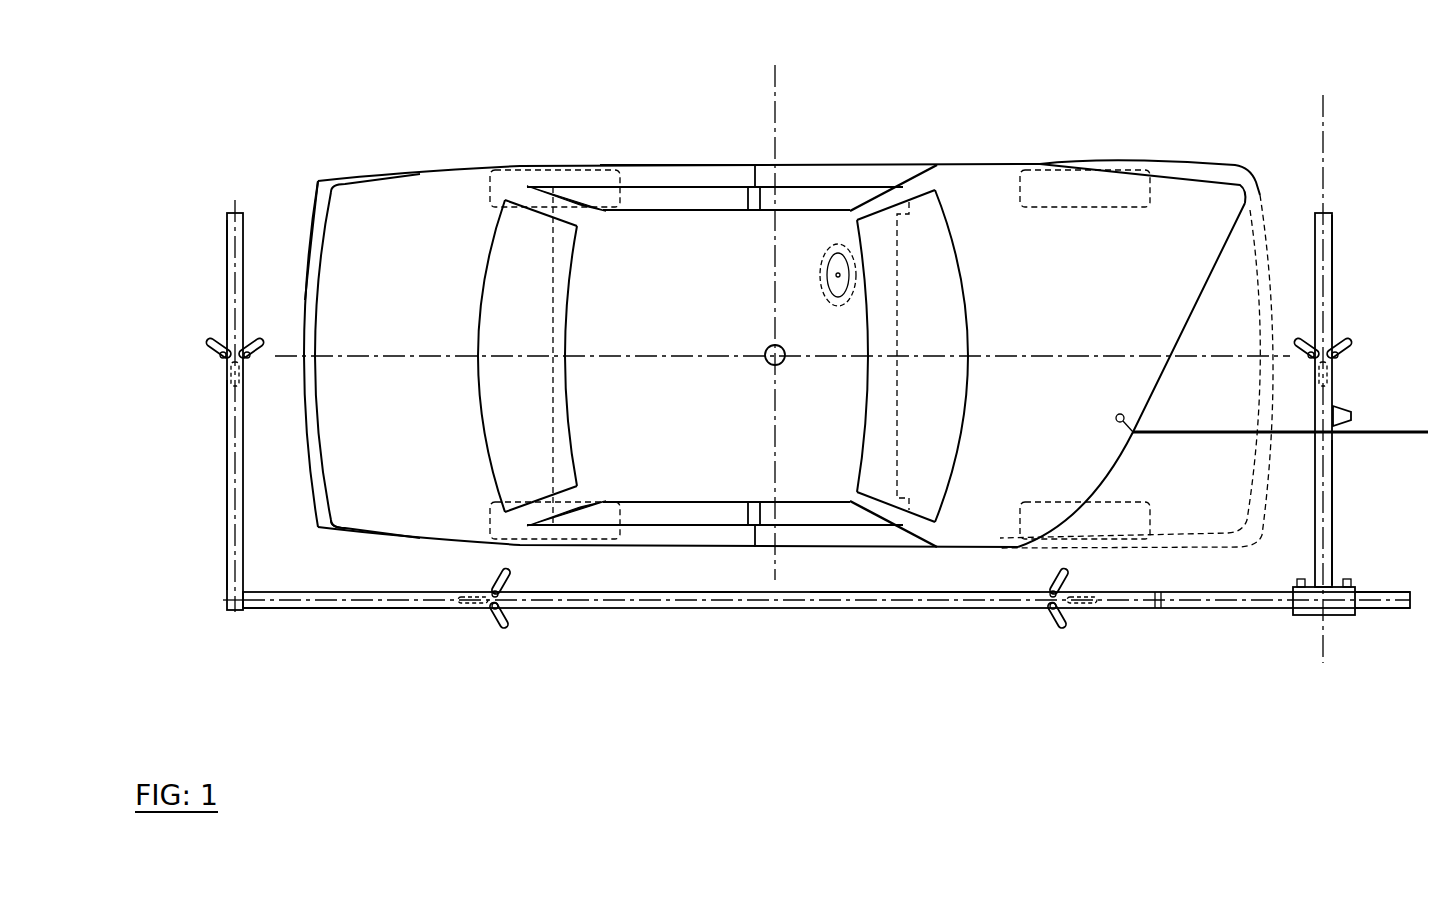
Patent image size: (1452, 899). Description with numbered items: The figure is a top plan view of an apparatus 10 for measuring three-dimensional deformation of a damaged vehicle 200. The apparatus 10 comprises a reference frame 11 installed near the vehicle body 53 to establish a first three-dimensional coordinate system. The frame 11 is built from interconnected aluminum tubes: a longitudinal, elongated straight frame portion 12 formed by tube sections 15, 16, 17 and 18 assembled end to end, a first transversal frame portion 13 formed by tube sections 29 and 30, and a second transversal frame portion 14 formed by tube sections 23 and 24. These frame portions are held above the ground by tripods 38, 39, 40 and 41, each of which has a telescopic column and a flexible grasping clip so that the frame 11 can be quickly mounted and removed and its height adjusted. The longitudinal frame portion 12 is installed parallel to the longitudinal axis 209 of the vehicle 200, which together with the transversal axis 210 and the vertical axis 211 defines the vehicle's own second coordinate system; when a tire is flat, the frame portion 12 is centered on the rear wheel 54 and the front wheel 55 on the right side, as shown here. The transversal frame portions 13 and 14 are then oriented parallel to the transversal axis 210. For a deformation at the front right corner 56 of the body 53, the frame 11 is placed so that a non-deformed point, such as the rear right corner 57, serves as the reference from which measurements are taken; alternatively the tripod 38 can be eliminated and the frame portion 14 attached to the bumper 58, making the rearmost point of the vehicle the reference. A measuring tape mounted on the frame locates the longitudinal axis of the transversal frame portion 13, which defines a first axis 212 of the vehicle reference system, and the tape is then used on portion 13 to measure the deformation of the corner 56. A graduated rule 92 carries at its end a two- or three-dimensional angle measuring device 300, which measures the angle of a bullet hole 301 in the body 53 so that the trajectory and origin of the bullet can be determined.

The apparatus 10 is at (598, 738).
The reference frame 11 is at (777, 608).
The longitudinal frame portion 12 is at (987, 608).
The first transversal frame portion 13 is at (1332, 272).
The second transversal frame portion 14 is at (227, 247).
The tube section 15 is at (286, 608).
The tube section 16 is at (660, 608).
The tube section 17 is at (893, 608).
The tube section 18 is at (1403, 610).
The tube section 23 is at (227, 300).
The tube section 24 is at (227, 470).
The tube section 29 is at (1332, 540).
The tube section 30 is at (1332, 224).
The tripod 38 is at (223, 362).
The tripod 39 is at (500, 630).
The tripod 40 is at (1055, 632).
The tripod 41 is at (1348, 352).
The vehicle body 53 is at (672, 165).
The rear wheel 54 is at (488, 517).
The front wheel 55 is at (1022, 517).
The front right corner 56 is at (1237, 540).
The rear right corner 57 is at (323, 515).
The bumper 58 is at (318, 181).
The graduated rule 92 is at (1193, 432).
The damaged vehicle 200 is at (859, 155).
The longitudinal axis 209 is at (367, 357).
The transversal axis 210 is at (775, 258).
The vertical axis 211 is at (767, 349).
The first axis 212 is at (1323, 110).
The angle measuring device 300 is at (1138, 437).
The bullet hole 301 is at (1112, 415).